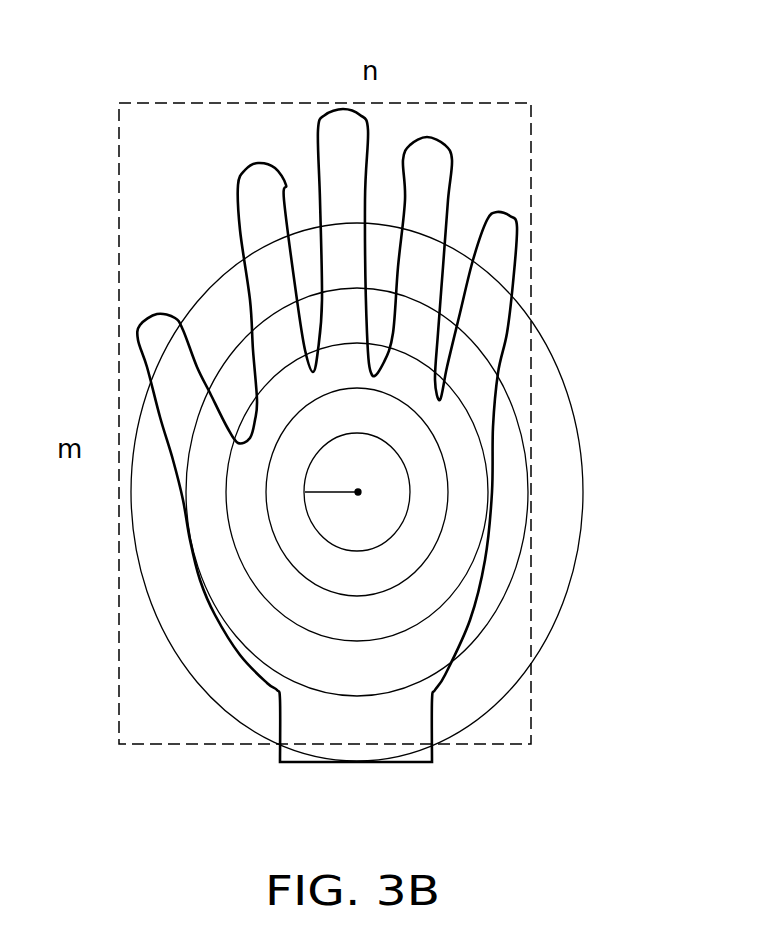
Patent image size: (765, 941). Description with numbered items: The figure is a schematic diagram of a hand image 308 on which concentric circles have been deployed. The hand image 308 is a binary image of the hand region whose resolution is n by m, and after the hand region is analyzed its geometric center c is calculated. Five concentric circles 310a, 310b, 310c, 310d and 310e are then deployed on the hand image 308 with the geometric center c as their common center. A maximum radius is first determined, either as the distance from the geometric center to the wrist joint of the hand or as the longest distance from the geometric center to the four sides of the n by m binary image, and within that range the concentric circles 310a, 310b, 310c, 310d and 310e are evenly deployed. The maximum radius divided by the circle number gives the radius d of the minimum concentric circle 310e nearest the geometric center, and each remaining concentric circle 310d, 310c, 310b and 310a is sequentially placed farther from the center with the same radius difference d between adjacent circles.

The hand image 308 is at (680, 65).
The concentric circle 310a is at (563, 375).
The concentric circle 310b is at (531, 475).
The concentric circle 310c is at (482, 552).
The concentric circle 310d is at (425, 567).
The concentric circle 310e is at (307, 510).